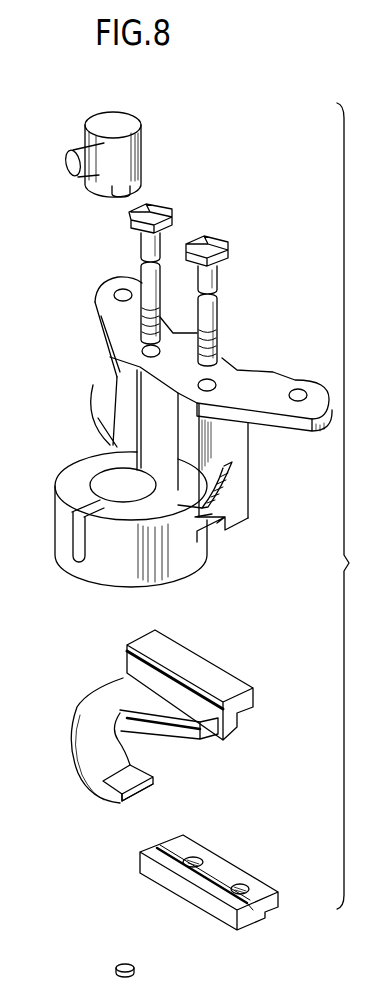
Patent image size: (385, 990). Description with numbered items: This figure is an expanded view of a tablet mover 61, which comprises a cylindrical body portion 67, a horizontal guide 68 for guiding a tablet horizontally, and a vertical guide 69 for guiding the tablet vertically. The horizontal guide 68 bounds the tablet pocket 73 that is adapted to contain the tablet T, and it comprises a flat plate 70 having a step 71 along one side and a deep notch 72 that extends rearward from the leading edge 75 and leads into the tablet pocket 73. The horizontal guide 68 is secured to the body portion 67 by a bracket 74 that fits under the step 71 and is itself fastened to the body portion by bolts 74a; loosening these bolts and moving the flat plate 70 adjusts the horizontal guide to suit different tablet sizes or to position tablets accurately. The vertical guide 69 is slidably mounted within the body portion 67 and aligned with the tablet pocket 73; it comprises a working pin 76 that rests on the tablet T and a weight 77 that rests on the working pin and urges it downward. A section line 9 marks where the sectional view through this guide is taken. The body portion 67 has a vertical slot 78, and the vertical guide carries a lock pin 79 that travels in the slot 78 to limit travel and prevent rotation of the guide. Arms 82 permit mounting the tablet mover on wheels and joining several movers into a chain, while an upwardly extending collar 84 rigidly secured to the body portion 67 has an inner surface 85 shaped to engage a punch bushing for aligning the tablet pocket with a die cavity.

The section line 9 is at (119, 66).
The vertical guide 69 is at (143, 126).
The weight 77 is at (144, 163).
The lock pin 79 is at (77, 152).
The working pin 76 is at (110, 190).
The bolts 74a is at (158, 207).
The arms 82 is at (113, 393).
The collar 84 is at (122, 415).
The inner surface 85 is at (139, 434).
The cylindrical body portion 67 is at (61, 504).
The vertical slot 78 is at (78, 543).
The step 71 is at (127, 666).
The flat plate 70 is at (78, 721).
The tablet pocket 73 is at (135, 713).
The deep notch 72 is at (132, 750).
The horizontal guide 68 is at (77, 767).
The leading edge 75 is at (123, 805).
The bracket 74 is at (220, 872).
The tablet T is at (132, 963).
The tablet mover 61 is at (356, 506).